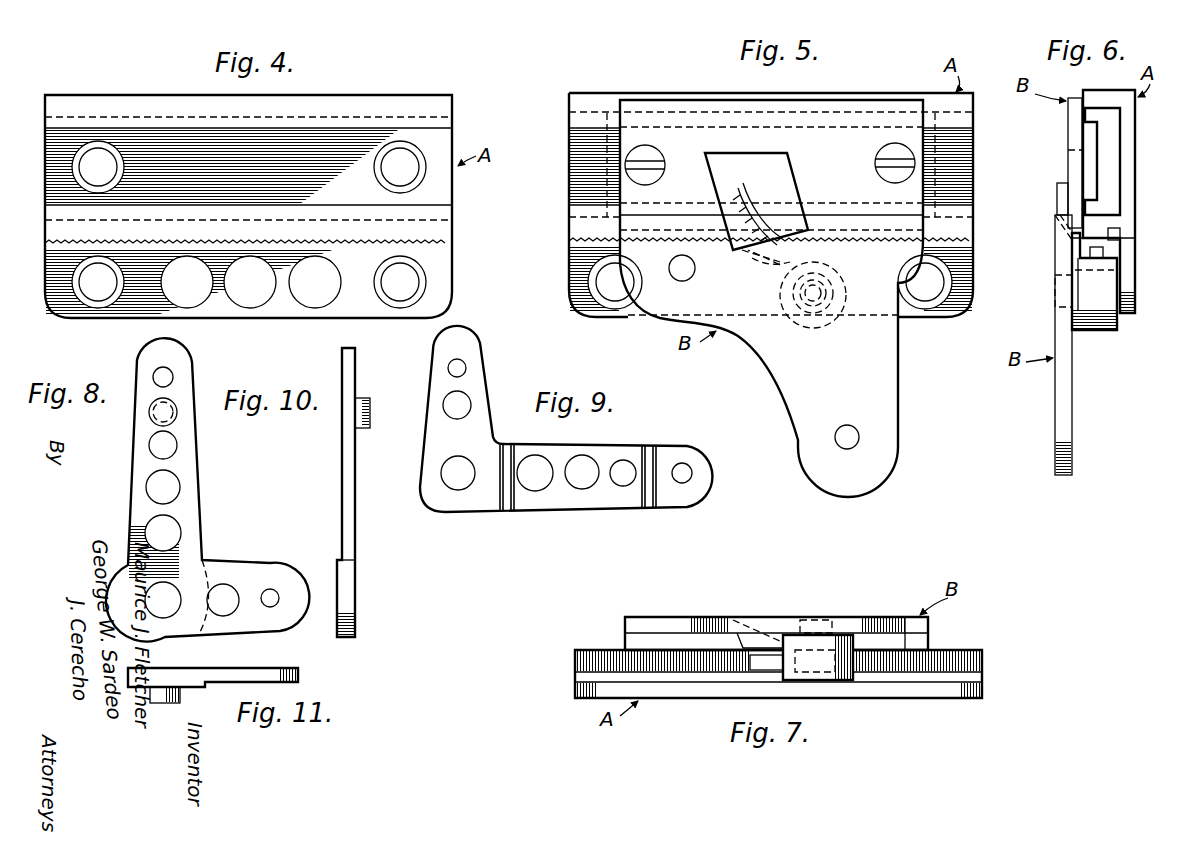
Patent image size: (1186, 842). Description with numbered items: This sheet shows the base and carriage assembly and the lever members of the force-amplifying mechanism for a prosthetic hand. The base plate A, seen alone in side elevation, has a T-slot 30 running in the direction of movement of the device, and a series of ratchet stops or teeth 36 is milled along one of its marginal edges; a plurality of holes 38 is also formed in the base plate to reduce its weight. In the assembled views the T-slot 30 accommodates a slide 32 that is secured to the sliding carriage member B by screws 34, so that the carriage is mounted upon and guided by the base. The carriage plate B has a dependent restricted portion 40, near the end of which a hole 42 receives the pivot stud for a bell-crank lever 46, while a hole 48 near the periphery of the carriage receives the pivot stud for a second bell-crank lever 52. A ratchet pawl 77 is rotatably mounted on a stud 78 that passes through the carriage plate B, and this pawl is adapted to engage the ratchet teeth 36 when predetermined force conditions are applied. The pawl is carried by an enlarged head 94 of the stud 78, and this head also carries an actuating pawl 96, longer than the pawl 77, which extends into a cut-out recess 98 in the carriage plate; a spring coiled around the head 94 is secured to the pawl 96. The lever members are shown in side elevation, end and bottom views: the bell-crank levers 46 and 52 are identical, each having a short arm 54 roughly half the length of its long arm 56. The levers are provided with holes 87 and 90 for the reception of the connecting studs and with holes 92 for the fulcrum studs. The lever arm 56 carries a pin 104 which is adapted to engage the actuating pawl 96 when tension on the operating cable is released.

In FIG. 4, the T-slot 30 is at (436, 139).
In FIG. 5, the T-slot 30 is at (582, 135).
In FIG. 6, the T-slot 30 is at (1123, 200).
In FIG. 5, the slide 32 is at (616, 135).
In FIG. 6, the slide 32 is at (1100, 135).
In FIG. 5, the screws 34 is at (655, 164).
In FIG. 4, the ratchet teeth 36 is at (446, 243).
In FIG. 5, the ratchet teeth 36 is at (580, 244).
In FIG. 6, the ratchet teeth 36 is at (1113, 238).
In FIG. 7, the ratchet teeth 36 is at (592, 661).
In FIG. 4, the holes 38 is at (305, 298).
In FIG. 5, the dependent restricted portion 40 is at (878, 426).
In FIG. 6, the dependent restricted portion 40 is at (1066, 420).
In FIG. 7, the dependent restricted portion 40 is at (860, 623).
In FIG. 5, the hole 42 is at (860, 437).
In FIG. 8, the bell-crank lever 46 is at (202, 549).
In FIG. 9, the bell-crank lever 46 is at (566, 419).
In FIG. 10, the bell-crank lever 46 is at (360, 538).
In FIG. 11, the bell-crank lever 46 is at (182, 668).
In FIG. 5, the hole 48 is at (686, 281).
In FIG. 9, the second bell-crank lever 52 is at (512, 514).
In FIG. 8, the short arm 54 is at (252, 622).
In FIG. 9, the short arm 54 is at (488, 380).
In FIG. 10, the short arm 54 is at (356, 596).
In FIG. 11, the short arm 54 is at (300, 676).
In FIG. 8, the long arm 56 is at (185, 467).
In FIG. 9, the long arm 56 is at (600, 508).
In FIG. 10, the long arm 56 is at (342, 464).
In FIG. 5, the ratchet pawl 77 is at (752, 262).
In FIG. 6, the ratchet pawl 77 is at (1105, 252).
In FIG. 7, the ratchet pawl 77 is at (768, 656).
In FIG. 5, the stud 78 is at (822, 287).
In FIG. 6, the stud 78 is at (1054, 293).
In FIG. 7, the stud 78 is at (812, 621).
In FIG. 8, the hole 87 is at (272, 591).
In FIG. 9, the hole 87 is at (466, 368).
In FIG. 8, the hole 90 is at (172, 379).
In FIG. 9, the hole 90 is at (694, 479).
In FIG. 8, the hole 92 is at (150, 592).
In FIG. 9, the hole 92 is at (450, 475).
In FIG. 5, the enlarged head 94 is at (838, 322).
In FIG. 6, the enlarged head 94 is at (1110, 332).
In FIG. 7, the enlarged head 94 is at (832, 682).
In FIG. 5, the actuating pawl 96 is at (762, 216).
In FIG. 6, the actuating pawl 96 is at (1057, 186).
In FIG. 7, the actuating pawl 96 is at (752, 632).
In FIG. 5, the cut-out recess 98 is at (786, 165).
In FIG. 10, the pin 104 is at (368, 394).
In FIG. 11, the pin 104 is at (180, 703).